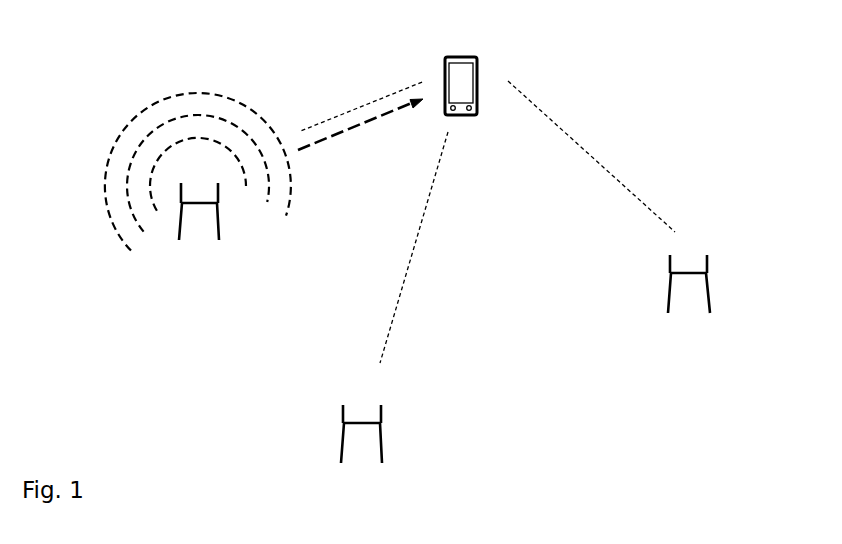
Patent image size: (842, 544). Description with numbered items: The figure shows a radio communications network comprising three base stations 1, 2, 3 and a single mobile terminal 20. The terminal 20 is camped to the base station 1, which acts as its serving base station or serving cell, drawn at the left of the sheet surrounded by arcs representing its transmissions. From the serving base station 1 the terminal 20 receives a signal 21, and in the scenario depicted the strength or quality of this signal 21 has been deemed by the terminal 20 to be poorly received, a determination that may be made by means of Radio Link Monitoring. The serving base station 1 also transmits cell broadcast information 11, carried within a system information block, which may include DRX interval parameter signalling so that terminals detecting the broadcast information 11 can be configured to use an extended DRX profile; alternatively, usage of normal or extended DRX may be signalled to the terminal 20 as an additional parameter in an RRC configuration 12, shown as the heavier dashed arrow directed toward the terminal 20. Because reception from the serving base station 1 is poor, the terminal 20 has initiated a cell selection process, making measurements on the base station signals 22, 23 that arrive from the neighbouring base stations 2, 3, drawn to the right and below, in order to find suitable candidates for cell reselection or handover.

The base station 1 is at (223, 207).
The cell broadcast information 11 is at (268, 119).
The RRC configuration 12 is at (355, 125).
The terminal 20 is at (490, 103).
The signal 21 is at (378, 95).
The base station signal 22 is at (592, 172).
The base station signal 23 is at (432, 223).
The base station 2 is at (718, 275).
The base station 3 is at (387, 427).